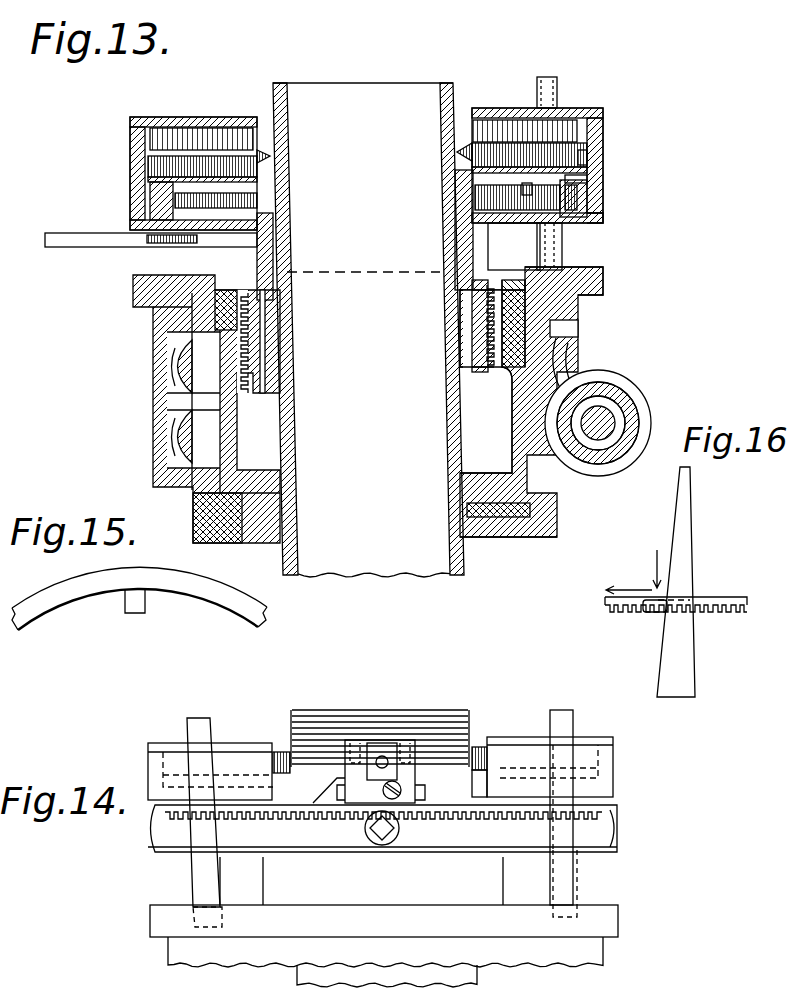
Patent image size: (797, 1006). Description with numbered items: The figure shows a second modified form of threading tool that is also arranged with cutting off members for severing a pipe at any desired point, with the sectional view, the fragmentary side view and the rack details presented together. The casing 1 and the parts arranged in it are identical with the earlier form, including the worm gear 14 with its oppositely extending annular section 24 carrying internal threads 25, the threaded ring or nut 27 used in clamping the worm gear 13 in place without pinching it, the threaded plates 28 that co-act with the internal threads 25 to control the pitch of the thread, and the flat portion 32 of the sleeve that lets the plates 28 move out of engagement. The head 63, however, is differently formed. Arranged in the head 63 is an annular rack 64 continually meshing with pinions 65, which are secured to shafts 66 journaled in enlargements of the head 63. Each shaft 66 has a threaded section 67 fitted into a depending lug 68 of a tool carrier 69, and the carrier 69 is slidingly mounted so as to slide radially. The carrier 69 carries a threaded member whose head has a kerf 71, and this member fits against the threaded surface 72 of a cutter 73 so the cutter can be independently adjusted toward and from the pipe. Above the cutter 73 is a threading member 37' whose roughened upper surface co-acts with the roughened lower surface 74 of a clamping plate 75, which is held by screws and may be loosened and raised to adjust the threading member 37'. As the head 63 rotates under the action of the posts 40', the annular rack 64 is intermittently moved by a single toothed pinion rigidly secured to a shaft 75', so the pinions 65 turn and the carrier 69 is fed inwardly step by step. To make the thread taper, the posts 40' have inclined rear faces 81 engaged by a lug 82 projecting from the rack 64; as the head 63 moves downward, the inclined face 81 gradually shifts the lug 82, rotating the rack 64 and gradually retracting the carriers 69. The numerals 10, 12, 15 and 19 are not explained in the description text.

In FIG. 13, the casing 1 is at (153, 430).
In FIG. 13, the worm shaft 10 is at (575, 148).
In FIG. 13, the pivot ring 12 is at (608, 462).
In FIG. 13, the worm gear 13 is at (580, 368).
In FIG. 13, the worm gear 14 is at (522, 425).
In FIG. 13, the bottom plate 15 is at (548, 522).
In FIG. 13, the base flange 19 is at (546, 541).
In FIG. 13, the annular section 24 is at (505, 378).
In FIG. 13, the internal threads 25 is at (578, 330).
In FIG. 13, the threaded ring or nut 27 is at (580, 312).
In FIG. 13, the threaded plates 28 is at (458, 293).
In FIG. 13, the flat portion 32 is at (470, 350).
In FIG. 13, the threading member 37' is at (368, 330).
In FIG. 13, the posts 40' is at (587, 246).
In FIG. 14, the posts 40' is at (585, 813).
In FIG. 13, the head 63 is at (601, 224).
In FIG. 13, the annular rack 64 is at (592, 182).
In FIG. 16, the annular rack 64 is at (613, 613).
In FIG. 15, the annular rack 64 is at (88, 590).
In FIG. 14, the annular rack 64 is at (299, 822).
In FIG. 13, the pinions 65 is at (572, 212).
In FIG. 13, the shafts 66 is at (588, 197).
In FIG. 13, the threaded section 67 is at (497, 200).
In FIG. 13, the depending lug 68 is at (528, 198).
In FIG. 13, the tool carrier 69 is at (480, 180).
In FIG. 14, the tool carrier 69 is at (365, 795).
In FIG. 13, the kerf 71 is at (590, 160).
In FIG. 14, the kerf 71 is at (392, 802).
In FIG. 13, the threaded surface 72 is at (496, 118).
In FIG. 13, the cutter 73 is at (462, 152).
In FIG. 13, the roughened lower surface 74 is at (575, 108).
In FIG. 14, the clamping plate 75 is at (470, 742).
In FIG. 13, the shaft 75' is at (531, 92).
In FIG. 16, the inclined rear faces 81 is at (660, 684).
In FIG. 14, the inclined rear faces 81 is at (549, 878).
In FIG. 16, the lug 82 is at (655, 613).
In FIG. 15, the lug 82 is at (146, 604).